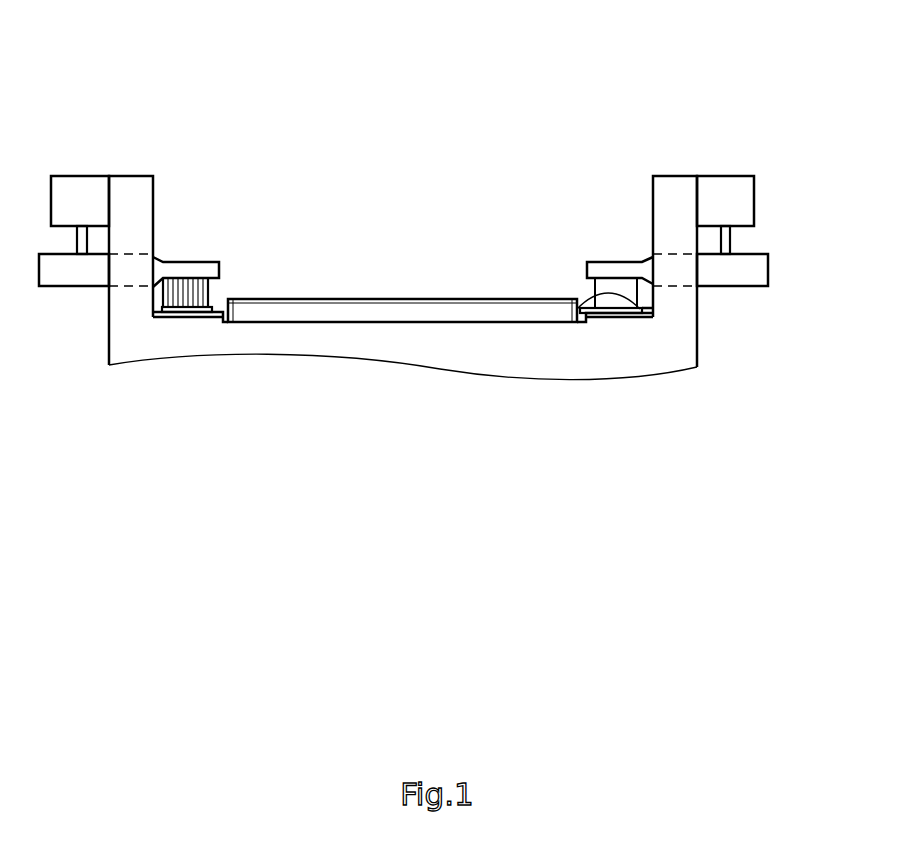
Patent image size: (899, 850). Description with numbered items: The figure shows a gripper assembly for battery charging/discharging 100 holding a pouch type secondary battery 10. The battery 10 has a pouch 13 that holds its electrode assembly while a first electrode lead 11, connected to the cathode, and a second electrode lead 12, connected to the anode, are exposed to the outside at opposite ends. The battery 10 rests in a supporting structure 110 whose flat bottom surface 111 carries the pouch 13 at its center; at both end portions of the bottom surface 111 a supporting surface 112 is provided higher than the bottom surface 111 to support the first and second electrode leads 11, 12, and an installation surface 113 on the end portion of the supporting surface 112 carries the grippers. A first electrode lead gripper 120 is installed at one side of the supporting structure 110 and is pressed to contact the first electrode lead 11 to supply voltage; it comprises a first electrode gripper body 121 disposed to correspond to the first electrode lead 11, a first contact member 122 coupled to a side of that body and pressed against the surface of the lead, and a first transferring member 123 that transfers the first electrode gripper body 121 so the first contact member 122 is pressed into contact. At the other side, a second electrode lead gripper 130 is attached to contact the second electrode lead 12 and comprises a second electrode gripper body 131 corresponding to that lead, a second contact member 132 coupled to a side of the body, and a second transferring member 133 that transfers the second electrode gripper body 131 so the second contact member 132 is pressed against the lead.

The gripper assembly for battery charging/discharging 100 is at (772, 220).
The battery 10 is at (223, 418).
The first electrode lead 11 is at (207, 318).
The second electrode lead 12 is at (605, 315).
The pouch 13 is at (363, 312).
The supporting structure 110 is at (790, 423).
The bottom surface 111 is at (300, 318).
The supporting surface 112 is at (657, 308).
The installation surface 113 is at (698, 300).
The first electrode lead gripper 120 is at (75, 95).
The first electrode gripper body 121 is at (170, 268).
The first contact member 122 is at (183, 290).
The first transferring member 123 is at (84, 188).
The second electrode lead gripper 130 is at (553, 95).
The second electrode gripper body 131 is at (633, 268).
The second contact member 132 is at (611, 284).
The second transferring member 133 is at (723, 186).